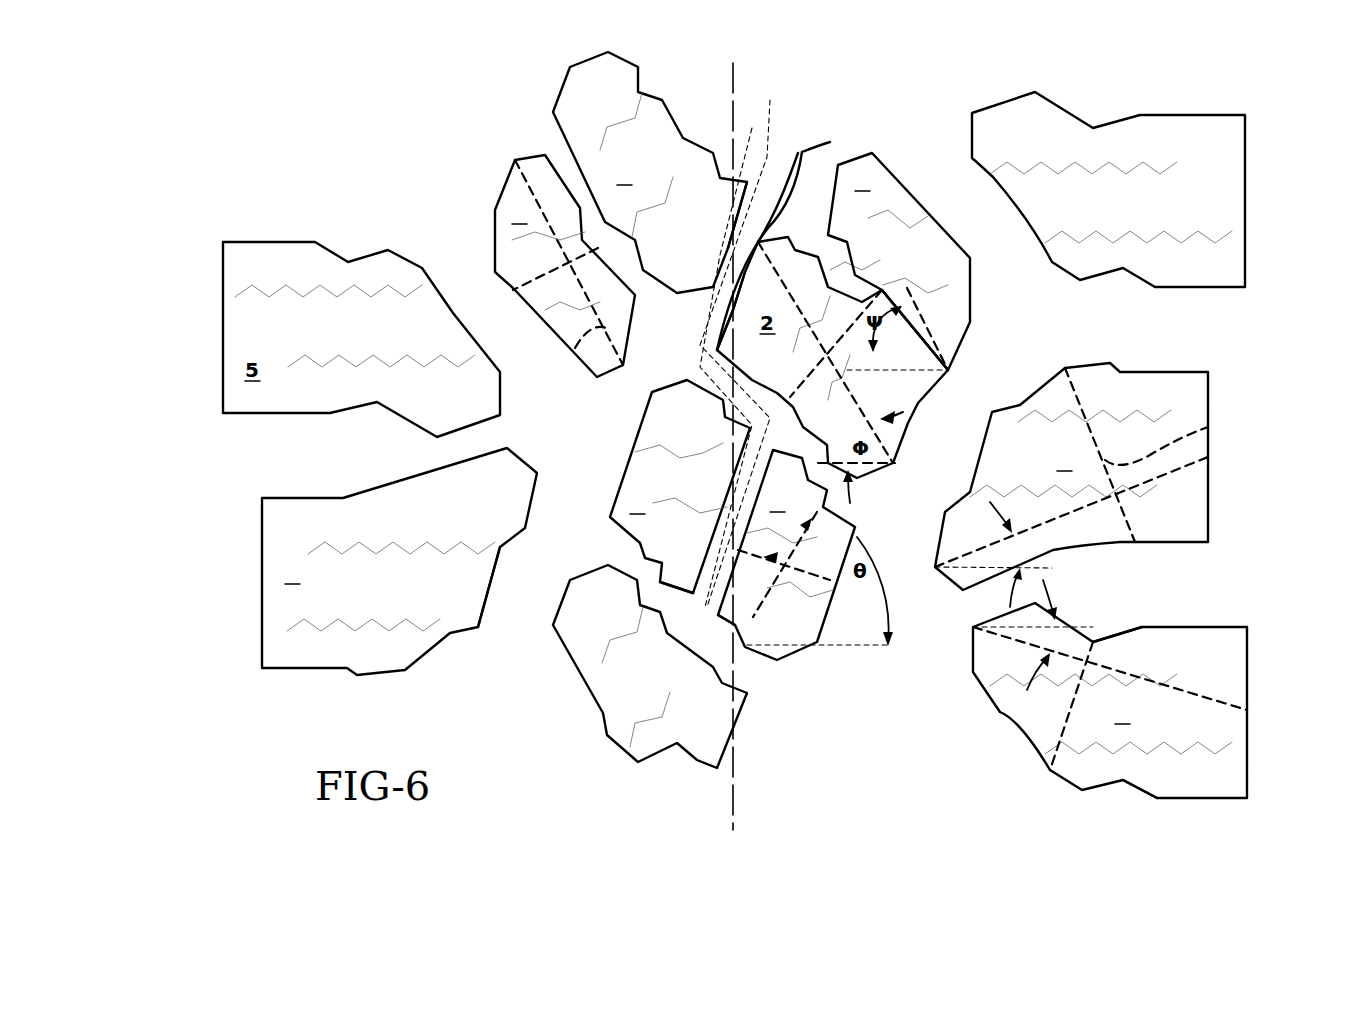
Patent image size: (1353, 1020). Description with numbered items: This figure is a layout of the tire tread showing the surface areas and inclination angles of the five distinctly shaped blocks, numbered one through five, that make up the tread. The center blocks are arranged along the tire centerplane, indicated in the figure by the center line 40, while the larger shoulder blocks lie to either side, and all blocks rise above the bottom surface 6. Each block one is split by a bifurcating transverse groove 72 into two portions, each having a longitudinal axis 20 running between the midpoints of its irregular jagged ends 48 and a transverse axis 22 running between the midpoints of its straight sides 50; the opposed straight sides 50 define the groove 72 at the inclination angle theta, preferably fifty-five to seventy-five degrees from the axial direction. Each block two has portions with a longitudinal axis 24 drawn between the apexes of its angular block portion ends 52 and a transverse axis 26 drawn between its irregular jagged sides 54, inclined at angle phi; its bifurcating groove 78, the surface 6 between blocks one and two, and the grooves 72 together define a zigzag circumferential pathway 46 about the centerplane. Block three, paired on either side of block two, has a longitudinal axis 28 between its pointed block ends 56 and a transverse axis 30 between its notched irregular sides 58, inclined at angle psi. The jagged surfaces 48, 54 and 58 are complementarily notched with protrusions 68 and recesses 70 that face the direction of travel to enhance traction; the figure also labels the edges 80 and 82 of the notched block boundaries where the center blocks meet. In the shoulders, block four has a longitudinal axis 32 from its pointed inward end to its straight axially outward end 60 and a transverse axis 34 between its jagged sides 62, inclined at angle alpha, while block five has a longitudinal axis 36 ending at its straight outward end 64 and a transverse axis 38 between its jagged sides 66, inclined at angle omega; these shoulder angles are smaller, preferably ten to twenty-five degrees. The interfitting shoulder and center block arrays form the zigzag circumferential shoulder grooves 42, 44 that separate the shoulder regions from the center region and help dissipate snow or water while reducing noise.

The bottom surface 6 is at (528, 567).
The longitudinal axis 20 is at (733, 625).
The transverse axis 22 is at (755, 548).
The longitudinal axis 24 is at (880, 419).
The transverse axis 26 is at (882, 283).
The longitudinal axis 28 is at (570, 357).
The transverse axis 30 is at (537, 278).
The longitudinal axis 32 is at (1180, 472).
The transverse axis 34 is at (1208, 427).
The longitudinal axis 36 is at (1223, 707).
The transverse axis 38 is at (1063, 727).
The center line 40 is at (732, 100).
The circumferential shoulder groove 42 is at (983, 226).
The circumferential shoulder groove 44 is at (520, 625).
The circumferential pathway 46 is at (768, 150).
The jagged ends 48 is at (845, 520).
The straight sides 50 is at (757, 503).
The angular block portion ends 52 is at (757, 130).
The irregular jagged sides 54 is at (820, 258).
The pointed block ends 56 is at (960, 350).
The notched irregular sides 58 is at (907, 180).
The straight axially outward end 60 is at (1208, 403).
The irregular jagged sides 62 is at (1092, 368).
The straight axially outward end 64 is at (1247, 680).
The irregular jagged sides 66 is at (1110, 637).
The protrusions 68 is at (750, 365).
The recesses 70 is at (740, 397).
The bifurcating transverse groove 72 is at (553, 148).
The bifurcating groove 78 is at (727, 257).
The edge 80 is at (727, 383).
The edge 82 is at (707, 572).